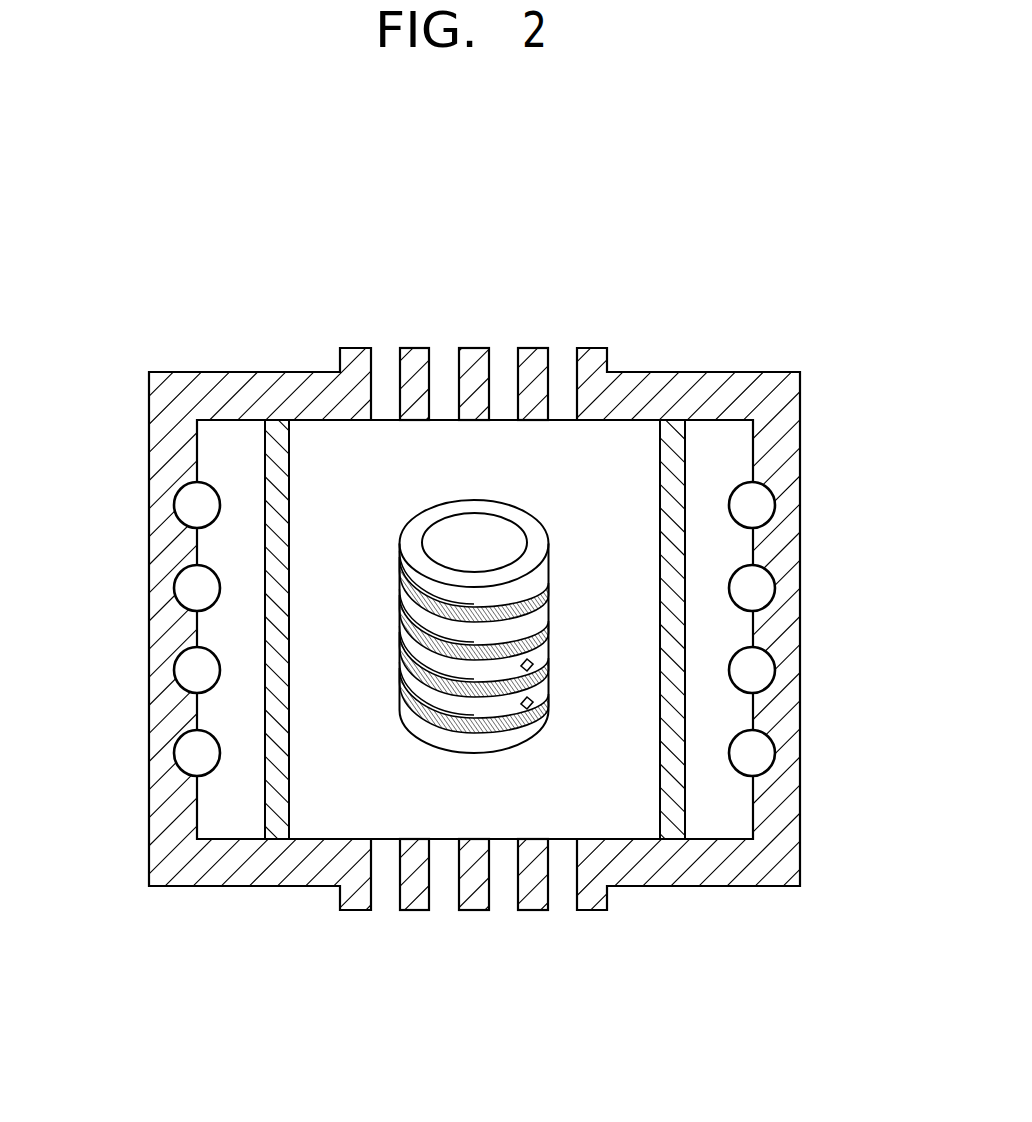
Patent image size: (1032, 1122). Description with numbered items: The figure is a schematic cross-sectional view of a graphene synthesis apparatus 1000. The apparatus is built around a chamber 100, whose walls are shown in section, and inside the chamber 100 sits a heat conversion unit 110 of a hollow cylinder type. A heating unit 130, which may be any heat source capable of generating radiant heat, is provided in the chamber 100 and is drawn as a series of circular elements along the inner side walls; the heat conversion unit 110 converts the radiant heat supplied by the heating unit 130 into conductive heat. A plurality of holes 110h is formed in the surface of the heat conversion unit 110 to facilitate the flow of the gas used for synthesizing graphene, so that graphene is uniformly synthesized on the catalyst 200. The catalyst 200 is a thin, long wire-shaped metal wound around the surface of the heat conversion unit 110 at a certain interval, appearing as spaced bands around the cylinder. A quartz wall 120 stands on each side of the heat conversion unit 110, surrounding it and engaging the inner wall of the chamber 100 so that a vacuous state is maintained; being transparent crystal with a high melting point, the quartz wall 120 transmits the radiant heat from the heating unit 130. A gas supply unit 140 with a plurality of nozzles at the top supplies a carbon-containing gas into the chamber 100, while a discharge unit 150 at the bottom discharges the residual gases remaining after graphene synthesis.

The graphene synthesis apparatus 1000 is at (786, 237).
The chamber 100 is at (788, 401).
The heat conversion unit 110 is at (503, 652).
The holes 110h is at (534, 702).
The quartz wall 120 is at (276, 822).
The heating unit 130 is at (180, 748).
The gas supply unit 140 is at (510, 325).
The discharge unit 150 is at (507, 937).
The catalyst 200 is at (547, 600).